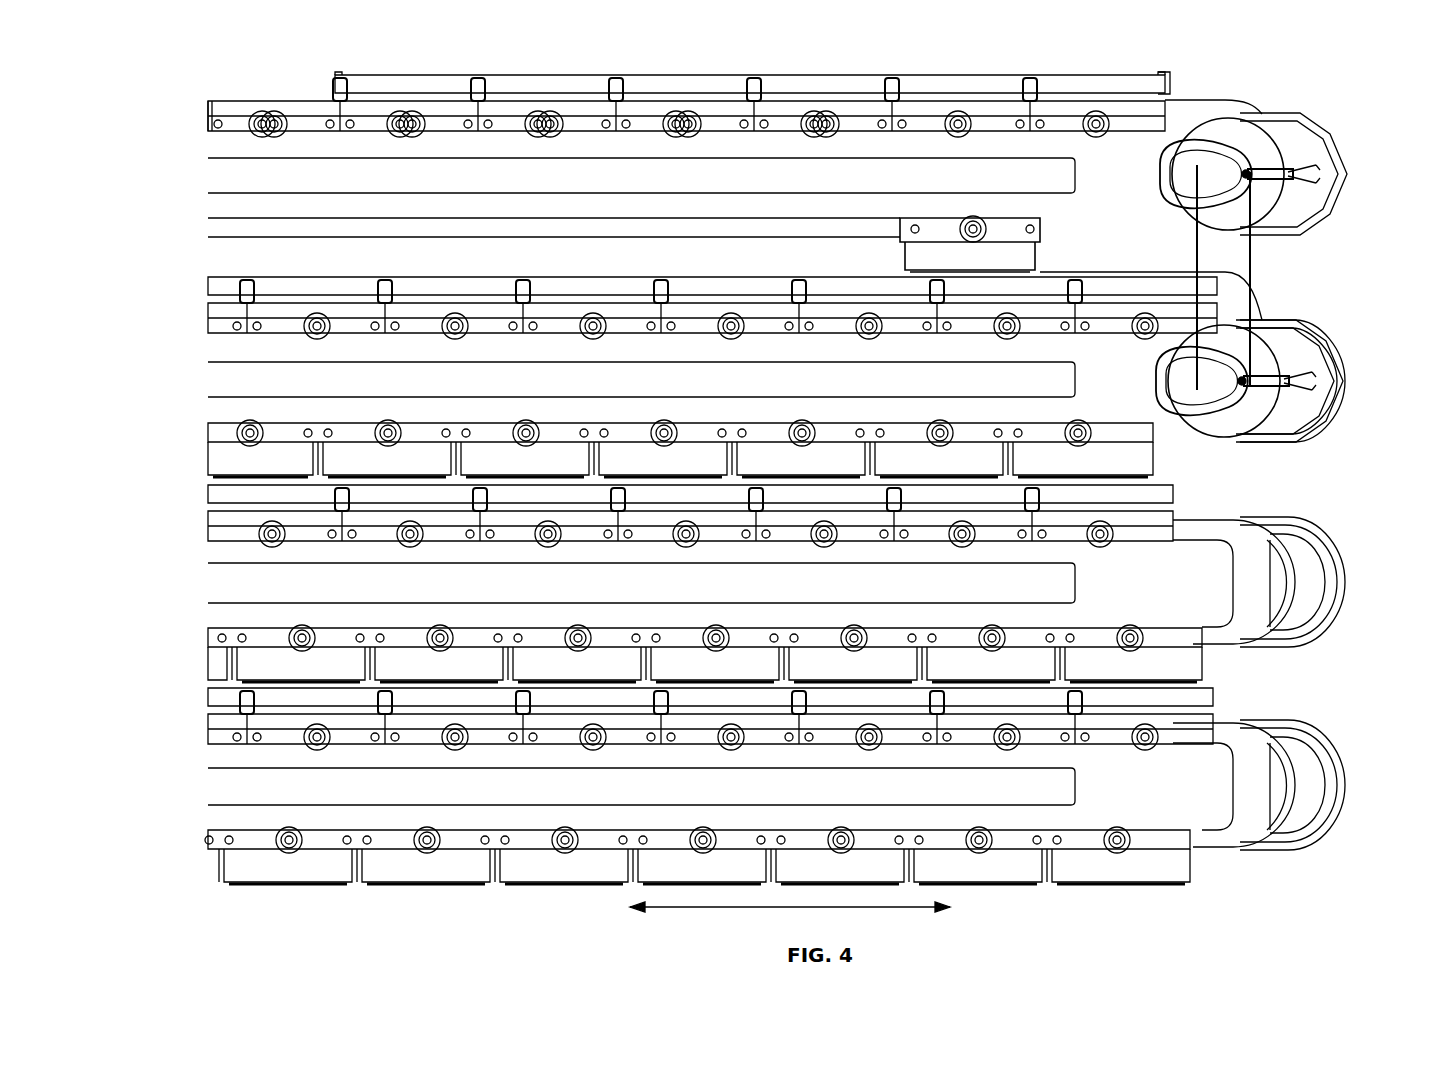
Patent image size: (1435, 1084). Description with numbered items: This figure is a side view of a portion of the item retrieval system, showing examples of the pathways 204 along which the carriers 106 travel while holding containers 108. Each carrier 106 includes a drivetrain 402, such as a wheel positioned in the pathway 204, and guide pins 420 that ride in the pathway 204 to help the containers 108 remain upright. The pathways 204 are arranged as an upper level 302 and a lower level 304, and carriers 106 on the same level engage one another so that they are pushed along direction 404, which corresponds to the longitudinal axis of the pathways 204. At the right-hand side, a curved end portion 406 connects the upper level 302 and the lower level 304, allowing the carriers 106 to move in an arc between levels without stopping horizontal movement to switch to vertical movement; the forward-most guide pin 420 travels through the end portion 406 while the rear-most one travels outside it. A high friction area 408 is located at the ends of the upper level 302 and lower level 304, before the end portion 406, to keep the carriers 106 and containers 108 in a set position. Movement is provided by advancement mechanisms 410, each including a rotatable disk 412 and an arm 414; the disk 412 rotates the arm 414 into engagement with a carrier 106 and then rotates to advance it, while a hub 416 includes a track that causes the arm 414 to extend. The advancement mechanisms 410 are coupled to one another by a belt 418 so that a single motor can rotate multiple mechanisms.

The carrier 106 is at (208, 107).
The container 108 is at (1165, 80).
The pathway 204 is at (1365, 385).
The upper level 302 is at (208, 131).
The lower level 304 is at (208, 218).
The drivetrain 402 is at (268, 112).
The direction 404 is at (952, 908).
The end portion 406 is at (1332, 440).
The high friction area 408 is at (1260, 100).
The advancement mechanism 410 is at (1276, 148).
The disk 412 is at (1300, 207).
The arm 414 is at (1300, 170).
The hub 416 is at (1163, 176).
The belt 418 is at (1258, 312).
The guide pin 420 is at (322, 118).